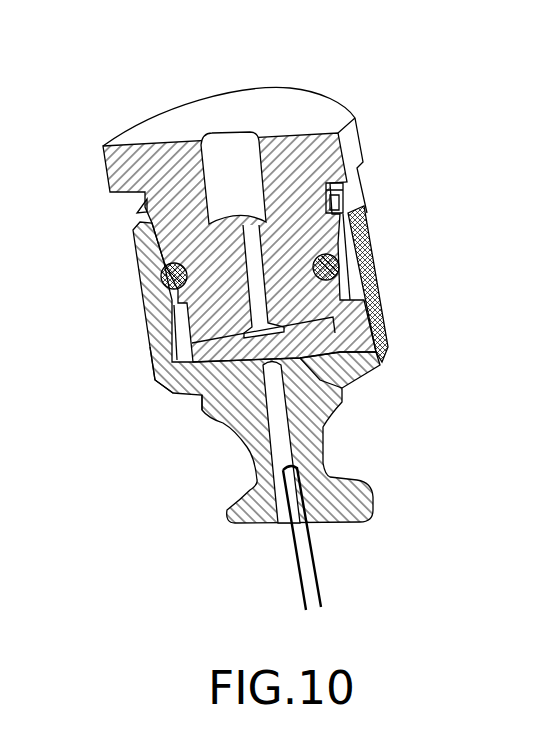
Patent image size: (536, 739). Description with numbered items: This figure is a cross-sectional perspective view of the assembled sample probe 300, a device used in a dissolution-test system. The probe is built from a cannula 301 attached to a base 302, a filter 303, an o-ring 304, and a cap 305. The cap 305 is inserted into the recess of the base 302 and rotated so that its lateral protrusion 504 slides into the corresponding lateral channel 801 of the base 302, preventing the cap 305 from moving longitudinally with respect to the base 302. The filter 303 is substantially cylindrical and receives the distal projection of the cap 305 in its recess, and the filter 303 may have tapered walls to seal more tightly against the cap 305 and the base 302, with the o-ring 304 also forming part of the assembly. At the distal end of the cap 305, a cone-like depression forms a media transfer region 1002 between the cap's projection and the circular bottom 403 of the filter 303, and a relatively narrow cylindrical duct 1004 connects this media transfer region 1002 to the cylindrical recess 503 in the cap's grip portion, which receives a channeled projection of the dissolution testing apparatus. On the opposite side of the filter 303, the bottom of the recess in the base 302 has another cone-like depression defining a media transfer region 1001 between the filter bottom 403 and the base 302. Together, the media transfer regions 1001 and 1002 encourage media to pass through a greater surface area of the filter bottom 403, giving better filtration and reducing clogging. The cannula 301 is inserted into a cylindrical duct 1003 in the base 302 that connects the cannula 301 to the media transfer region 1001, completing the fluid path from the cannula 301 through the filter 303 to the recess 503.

The sample probe 300 is at (370, 51).
The cap 305 is at (153, 163).
The cylindrical recess 503 is at (230, 158).
The lateral channel 801 is at (343, 197).
The lateral protrusion 504 is at (137, 213).
The o-ring 304 is at (161, 278).
The cylindrical duct 1004 is at (258, 292).
The media transfer region 1002 is at (250, 334).
The filter 303 is at (185, 345).
The media transfer region 1001 is at (313, 363).
The circular bottom 403 is at (228, 348).
The cylindrical duct 1003 is at (283, 428).
The base 302 is at (333, 510).
The cannula 301 is at (311, 565).